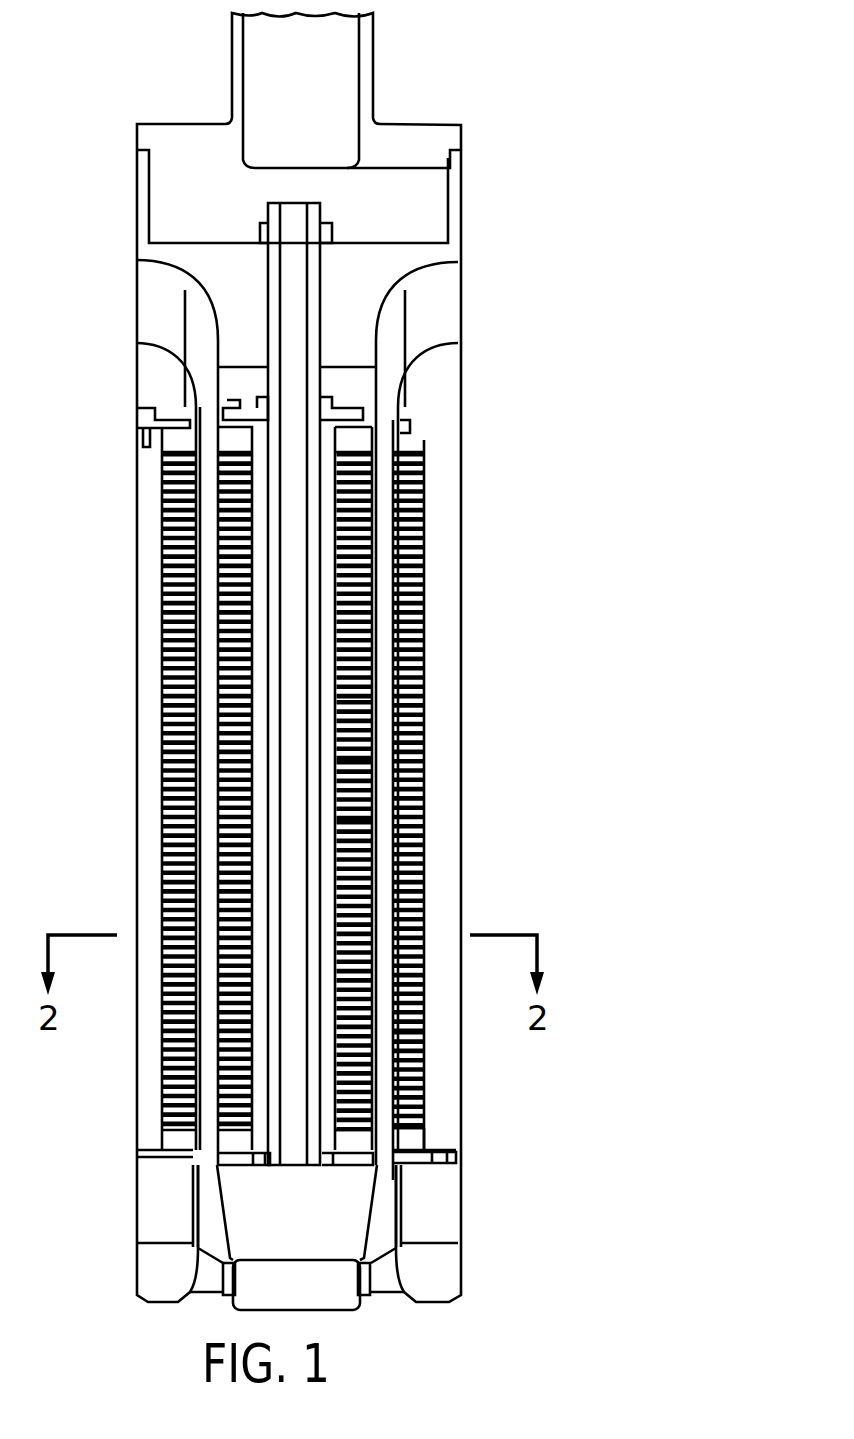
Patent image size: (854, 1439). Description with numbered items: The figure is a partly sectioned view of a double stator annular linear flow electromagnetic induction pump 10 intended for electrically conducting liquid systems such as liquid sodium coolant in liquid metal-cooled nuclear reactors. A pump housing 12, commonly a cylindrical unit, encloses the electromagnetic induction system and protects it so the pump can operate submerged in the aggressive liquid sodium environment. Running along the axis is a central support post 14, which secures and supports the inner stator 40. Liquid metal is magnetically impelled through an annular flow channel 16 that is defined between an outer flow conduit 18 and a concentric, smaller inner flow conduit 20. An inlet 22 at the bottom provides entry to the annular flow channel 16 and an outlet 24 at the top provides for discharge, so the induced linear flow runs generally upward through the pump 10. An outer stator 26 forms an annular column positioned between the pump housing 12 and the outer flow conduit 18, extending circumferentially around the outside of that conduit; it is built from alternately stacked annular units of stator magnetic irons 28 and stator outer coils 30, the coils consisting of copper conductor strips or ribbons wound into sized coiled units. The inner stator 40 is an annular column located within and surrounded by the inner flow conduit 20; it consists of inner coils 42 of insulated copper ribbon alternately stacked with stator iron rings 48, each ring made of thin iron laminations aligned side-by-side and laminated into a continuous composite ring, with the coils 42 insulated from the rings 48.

The double stator annular linear flow electromagnetic induction pump 10 is at (118, 733).
The pump housing 12 is at (459, 630).
The central support post 14 is at (325, 283).
The annular flow channel 16 is at (382, 478).
The outer flow conduit 18 is at (390, 535).
The inner flow conduit 20 is at (373, 578).
The inlet 22 is at (380, 1270).
The outlet 24 is at (440, 312).
The outer stator 26 is at (422, 1118).
The stator magnetic irons 28 is at (420, 1046).
The stator outer coils 30 is at (407, 1084).
The inner stator 40 is at (373, 684).
The inner coils 42 is at (358, 795).
The stator iron rings 48 is at (345, 746).